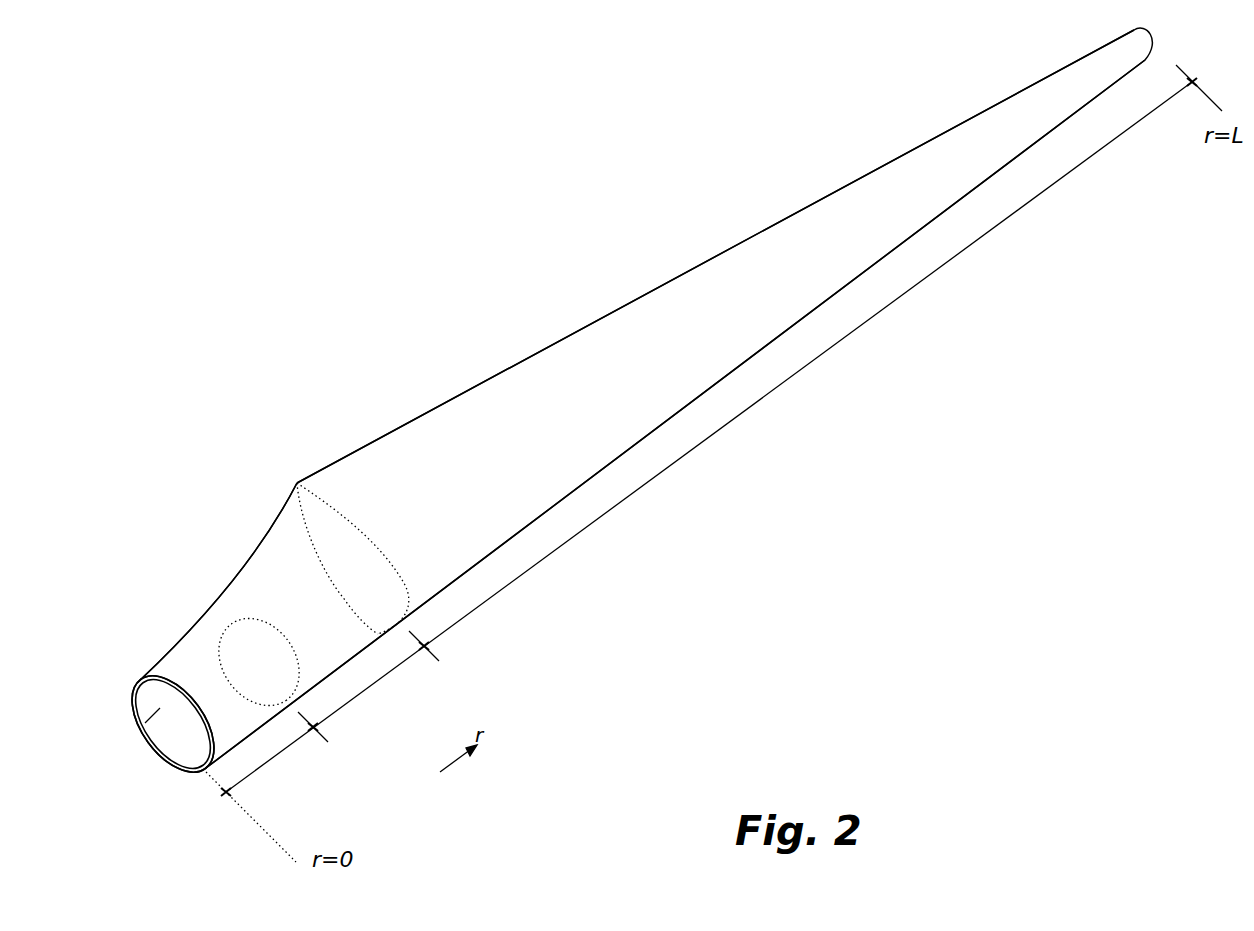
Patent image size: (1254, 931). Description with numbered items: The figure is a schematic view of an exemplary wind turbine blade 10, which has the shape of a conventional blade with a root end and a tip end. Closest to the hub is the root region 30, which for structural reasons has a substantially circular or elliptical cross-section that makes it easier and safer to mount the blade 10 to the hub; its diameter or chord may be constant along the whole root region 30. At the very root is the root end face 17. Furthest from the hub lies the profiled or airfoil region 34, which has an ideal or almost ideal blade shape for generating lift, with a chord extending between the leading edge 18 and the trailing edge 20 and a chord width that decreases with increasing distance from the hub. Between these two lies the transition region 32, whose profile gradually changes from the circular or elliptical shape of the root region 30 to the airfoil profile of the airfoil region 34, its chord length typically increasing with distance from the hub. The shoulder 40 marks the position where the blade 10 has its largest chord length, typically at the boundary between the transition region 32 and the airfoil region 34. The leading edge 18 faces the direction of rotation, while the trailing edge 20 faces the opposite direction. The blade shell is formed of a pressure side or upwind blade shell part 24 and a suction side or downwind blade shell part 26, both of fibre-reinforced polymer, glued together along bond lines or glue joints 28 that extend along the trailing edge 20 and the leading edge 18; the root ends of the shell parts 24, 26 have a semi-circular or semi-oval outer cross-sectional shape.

The wind turbine blade 10 is at (460, 258).
The root end face 17 is at (143, 723).
The leading edge 18 is at (843, 290).
The trailing edge 20 is at (707, 259).
The pressure side blade shell part 24 is at (175, 668).
The suction side blade shell part 26 is at (197, 768).
The bond lines 28 is at (164, 678).
The root region 30 is at (273, 753).
The transition region 32 is at (373, 683).
The airfoil region 34 is at (732, 422).
The shoulder 40 is at (297, 483).